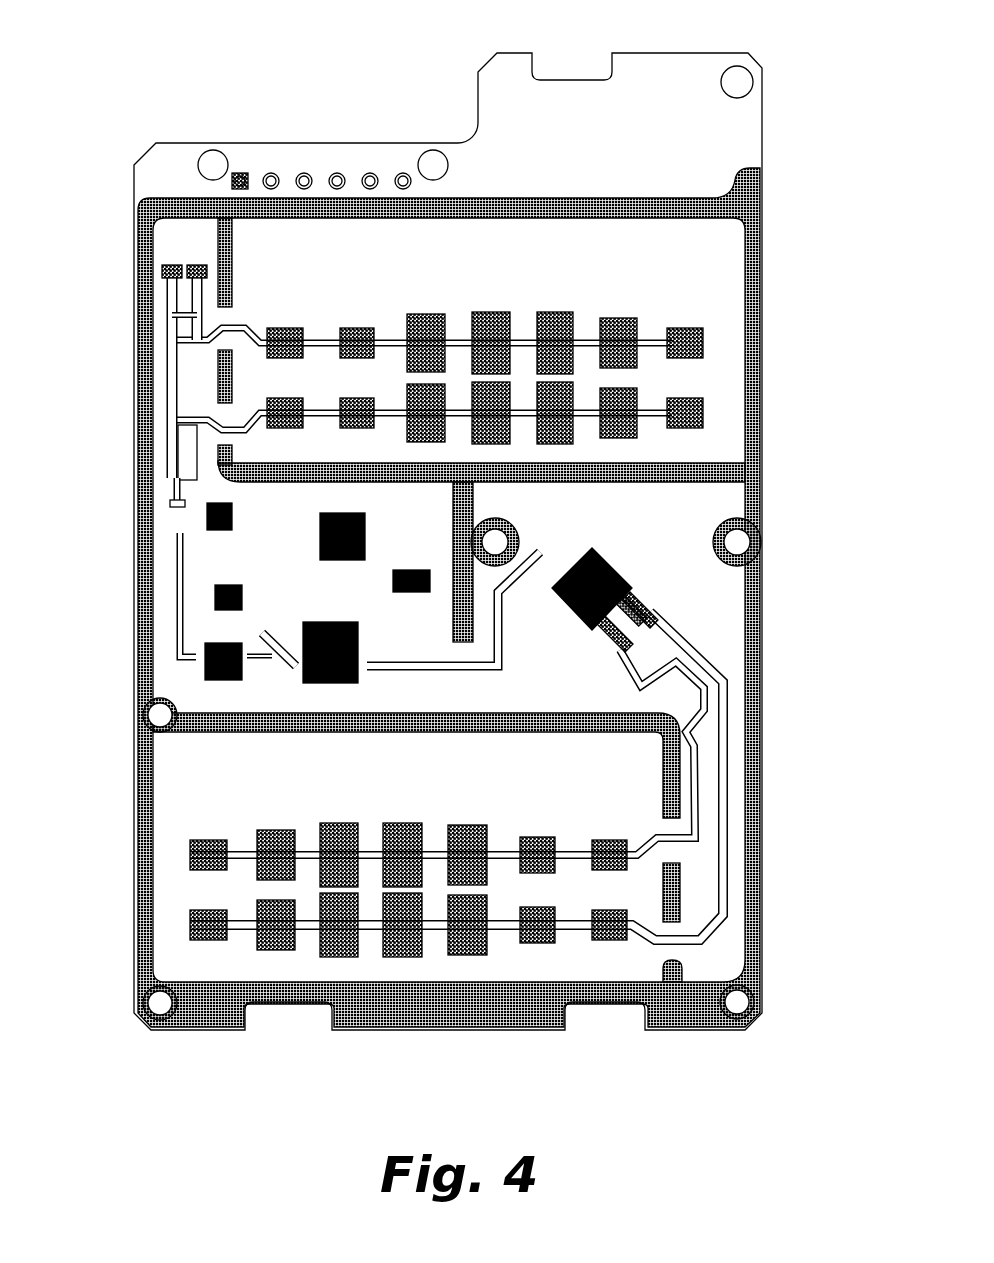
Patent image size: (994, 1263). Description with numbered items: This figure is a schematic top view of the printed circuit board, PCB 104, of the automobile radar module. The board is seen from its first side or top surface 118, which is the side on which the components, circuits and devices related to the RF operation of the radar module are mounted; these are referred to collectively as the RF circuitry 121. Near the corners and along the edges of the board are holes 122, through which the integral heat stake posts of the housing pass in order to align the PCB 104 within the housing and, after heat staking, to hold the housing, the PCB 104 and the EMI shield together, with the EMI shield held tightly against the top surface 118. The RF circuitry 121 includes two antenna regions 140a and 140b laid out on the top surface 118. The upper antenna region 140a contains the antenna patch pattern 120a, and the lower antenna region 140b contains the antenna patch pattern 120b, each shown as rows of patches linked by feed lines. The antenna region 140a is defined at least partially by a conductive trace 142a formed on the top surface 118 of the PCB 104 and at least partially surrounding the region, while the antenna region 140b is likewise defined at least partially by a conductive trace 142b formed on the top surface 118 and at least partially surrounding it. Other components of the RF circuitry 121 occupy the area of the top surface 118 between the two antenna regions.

The printed circuit board 104 is at (183, 1062).
The top surface 118 is at (658, 532).
The antenna patch pattern 120a is at (395, 300).
The antenna patch pattern 120b is at (325, 815).
The RF circuitry 121 is at (572, 679).
The holes 122 is at (750, 80).
The antenna region 140a is at (500, 269).
The antenna region 140b is at (425, 784).
The conductive trace 142a is at (265, 470).
The conductive trace 142b is at (455, 722).